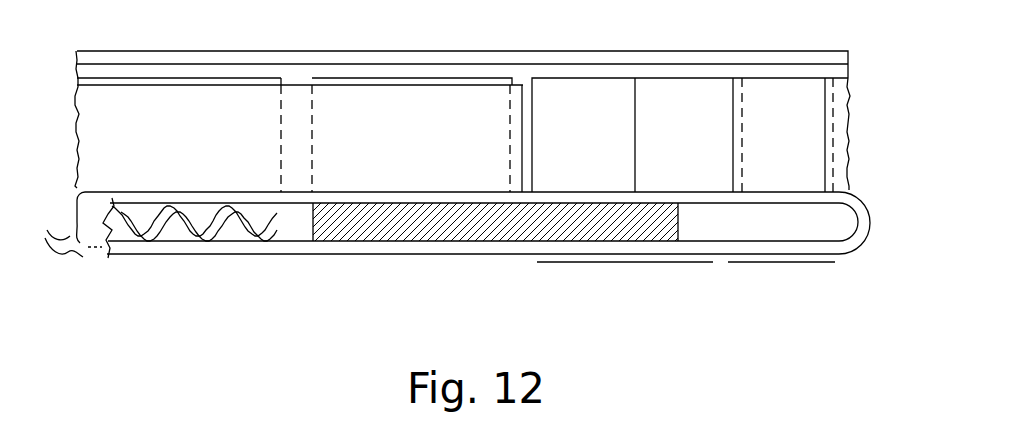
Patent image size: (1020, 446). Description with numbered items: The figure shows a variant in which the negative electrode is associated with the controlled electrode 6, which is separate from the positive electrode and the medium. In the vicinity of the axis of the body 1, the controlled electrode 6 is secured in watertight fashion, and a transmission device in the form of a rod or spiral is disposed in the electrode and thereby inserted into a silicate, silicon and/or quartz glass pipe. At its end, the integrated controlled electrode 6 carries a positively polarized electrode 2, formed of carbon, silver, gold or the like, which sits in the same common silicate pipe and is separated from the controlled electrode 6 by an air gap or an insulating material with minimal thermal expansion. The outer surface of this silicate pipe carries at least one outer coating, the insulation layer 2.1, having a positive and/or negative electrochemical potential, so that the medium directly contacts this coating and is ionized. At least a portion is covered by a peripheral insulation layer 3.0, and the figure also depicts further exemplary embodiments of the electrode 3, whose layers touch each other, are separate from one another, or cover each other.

The body 1 is at (268, 56).
The electrode 3 is at (280, 77).
The peripheral insulation layer 3.0 is at (460, 107).
The positively polarized electrode 2 is at (503, 228).
The insulation layer 2.1 is at (623, 263).
The controlled electrode 6 is at (202, 237).